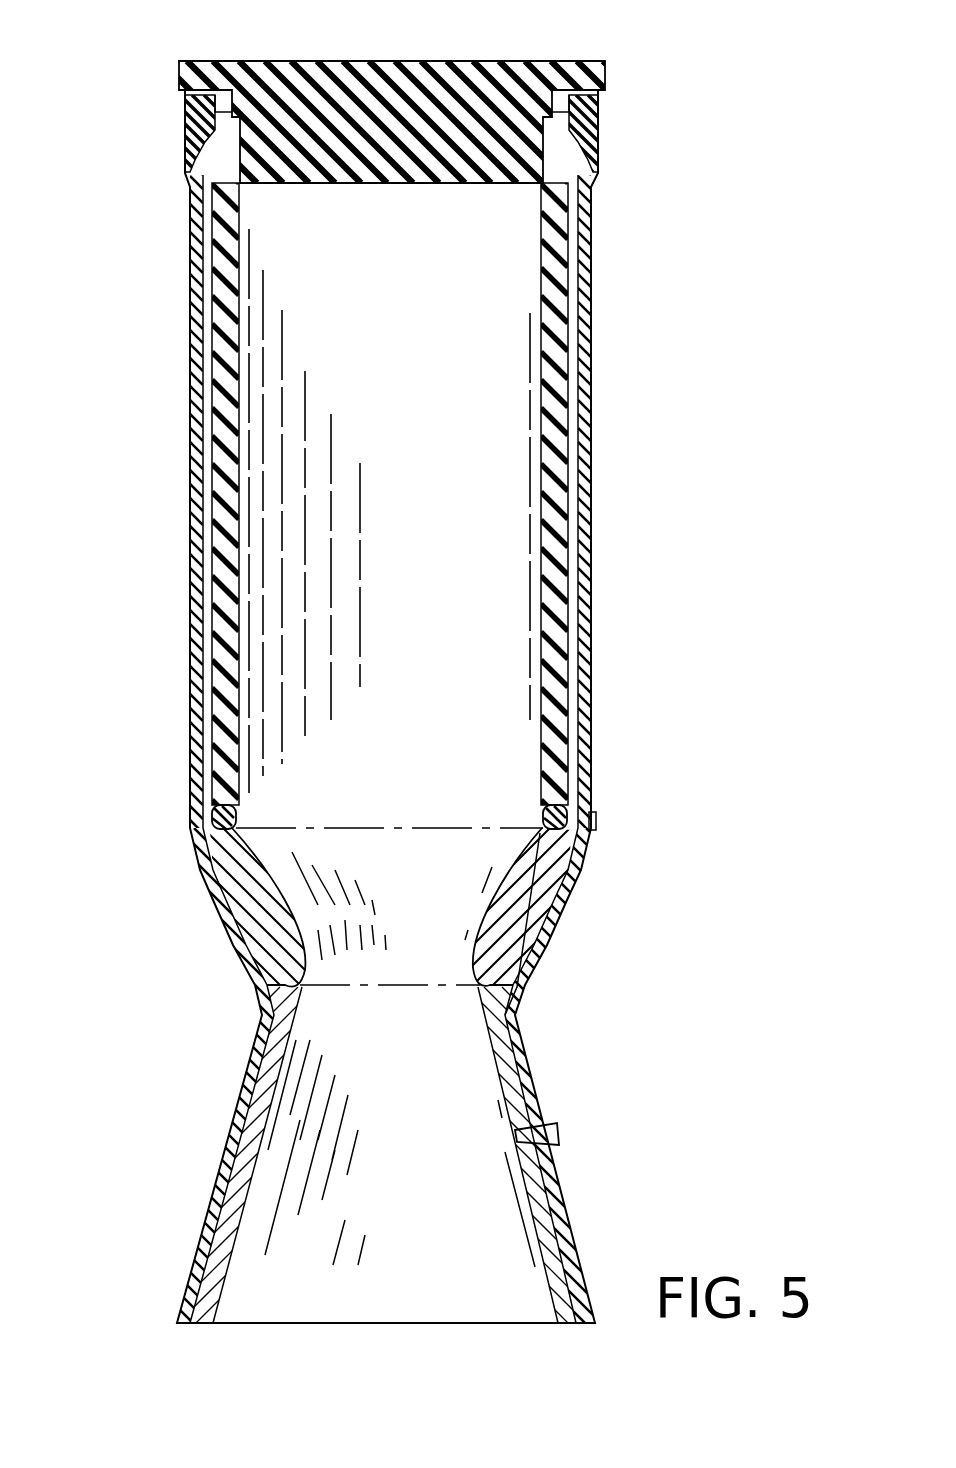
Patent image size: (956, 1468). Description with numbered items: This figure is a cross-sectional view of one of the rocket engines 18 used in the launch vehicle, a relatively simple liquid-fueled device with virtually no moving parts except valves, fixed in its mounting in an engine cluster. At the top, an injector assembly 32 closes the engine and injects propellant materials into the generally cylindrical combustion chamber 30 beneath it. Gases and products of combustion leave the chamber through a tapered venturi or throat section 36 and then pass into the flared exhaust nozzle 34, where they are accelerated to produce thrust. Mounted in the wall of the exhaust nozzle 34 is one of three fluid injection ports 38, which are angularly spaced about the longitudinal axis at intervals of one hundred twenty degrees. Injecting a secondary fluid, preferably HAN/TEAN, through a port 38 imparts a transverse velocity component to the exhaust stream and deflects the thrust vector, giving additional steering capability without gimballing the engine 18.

The engine 18 is at (142, 529).
The combustion chamber 30 is at (497, 622).
The injector assembly 32 is at (520, 33).
The exhaust nozzle 34 is at (220, 1158).
The throat section 36 is at (483, 910).
The fluid injection port 38 is at (547, 1120).